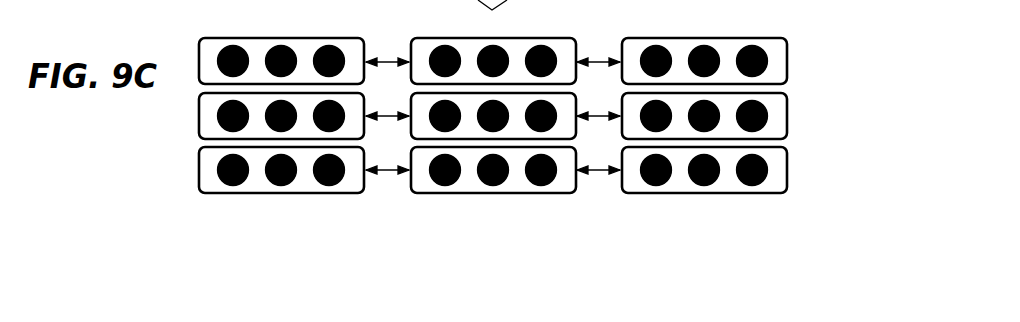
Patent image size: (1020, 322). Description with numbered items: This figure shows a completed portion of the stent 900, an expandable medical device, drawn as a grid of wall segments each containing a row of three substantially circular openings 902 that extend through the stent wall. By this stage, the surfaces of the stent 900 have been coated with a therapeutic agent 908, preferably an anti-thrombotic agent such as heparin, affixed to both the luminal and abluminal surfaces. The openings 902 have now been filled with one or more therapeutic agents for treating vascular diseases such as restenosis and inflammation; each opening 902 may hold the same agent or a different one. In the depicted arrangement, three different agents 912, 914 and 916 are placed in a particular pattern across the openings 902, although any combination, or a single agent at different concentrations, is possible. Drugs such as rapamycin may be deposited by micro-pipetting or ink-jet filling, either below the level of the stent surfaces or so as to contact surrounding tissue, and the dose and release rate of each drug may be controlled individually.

The stent 900 is at (300, 38).
The therapeutic agent 908 is at (738, 38).
The substantially circular openings 902 is at (328, 181).
The agent 912 is at (447, 182).
The agent 914 is at (495, 182).
The agent 916 is at (545, 182).